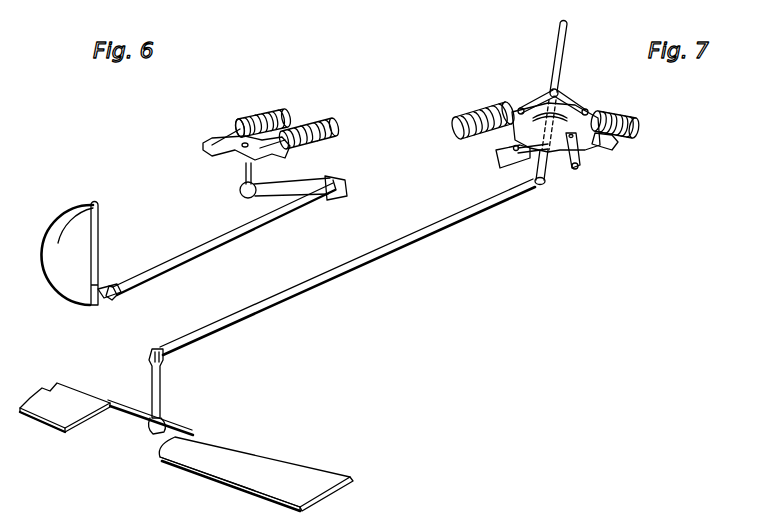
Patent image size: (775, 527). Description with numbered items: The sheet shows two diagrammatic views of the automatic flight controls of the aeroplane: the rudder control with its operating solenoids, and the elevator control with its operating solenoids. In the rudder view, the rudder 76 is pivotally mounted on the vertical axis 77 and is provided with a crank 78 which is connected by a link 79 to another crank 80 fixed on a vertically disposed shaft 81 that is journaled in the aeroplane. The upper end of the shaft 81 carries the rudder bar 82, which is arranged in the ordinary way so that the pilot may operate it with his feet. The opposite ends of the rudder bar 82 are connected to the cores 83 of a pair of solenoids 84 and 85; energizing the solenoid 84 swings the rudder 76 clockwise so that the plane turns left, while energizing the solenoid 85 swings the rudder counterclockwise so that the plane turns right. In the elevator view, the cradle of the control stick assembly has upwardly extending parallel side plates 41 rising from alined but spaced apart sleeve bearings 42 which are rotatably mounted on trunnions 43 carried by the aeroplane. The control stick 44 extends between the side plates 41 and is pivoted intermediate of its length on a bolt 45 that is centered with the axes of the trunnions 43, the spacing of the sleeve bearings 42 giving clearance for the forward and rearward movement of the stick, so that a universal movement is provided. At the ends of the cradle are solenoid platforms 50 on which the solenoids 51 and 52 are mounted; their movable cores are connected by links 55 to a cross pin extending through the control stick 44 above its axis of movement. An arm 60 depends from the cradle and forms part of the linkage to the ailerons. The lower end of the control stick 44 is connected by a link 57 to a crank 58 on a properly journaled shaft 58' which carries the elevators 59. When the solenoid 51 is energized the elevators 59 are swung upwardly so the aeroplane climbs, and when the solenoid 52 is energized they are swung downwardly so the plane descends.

In FIG. 6, the rudder 76 is at (72, 226).
In FIG. 6, the vertical axis 77 is at (99, 210).
In FIG. 6, the crank 78 is at (111, 286).
In FIG. 6, the link 79 is at (179, 261).
In FIG. 6, the crank 80 is at (293, 192).
In FIG. 6, the vertically disposed shaft 81 is at (244, 173).
In FIG. 6, the rudder bar 82 is at (203, 148).
In FIG. 6, the cores 83 is at (239, 126).
In FIG. 6, the solenoid 84 is at (285, 115).
In FIG. 6, the solenoid 85 is at (336, 130).
In FIG. 6, the link 57 is at (389, 251).
In FIG. 6, the crank 58 is at (174, 391).
In FIG. 6, the shaft 58' is at (163, 416).
In FIG. 6, the elevators 59 is at (165, 452).
In FIG. 7, the control stick 44 is at (554, 60).
In FIG. 7, the links 55 is at (540, 102).
In FIG. 7, the side plates 41 is at (528, 108).
In FIG. 7, the solenoid platforms 50 is at (458, 137).
In FIG. 7, the solenoid 51 is at (476, 117).
In FIG. 7, the solenoid 52 is at (605, 115).
In FIG. 7, the trunnions 43 is at (497, 158).
In FIG. 7, the sleeve bearings 42 is at (520, 159).
In FIG. 7, the bolt 45 is at (548, 167).
In FIG. 7, the arm 60 is at (582, 162).